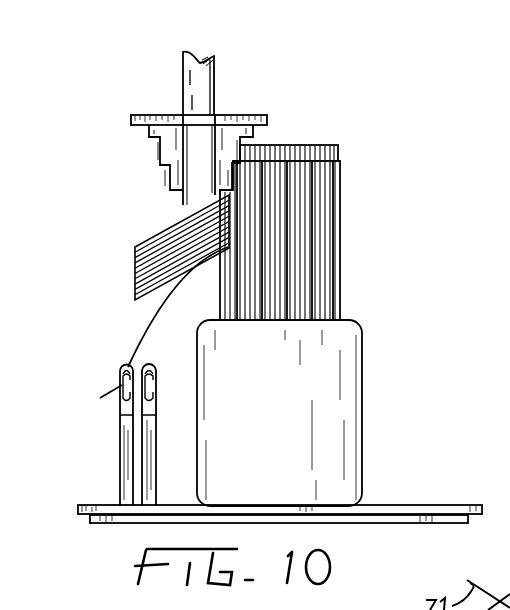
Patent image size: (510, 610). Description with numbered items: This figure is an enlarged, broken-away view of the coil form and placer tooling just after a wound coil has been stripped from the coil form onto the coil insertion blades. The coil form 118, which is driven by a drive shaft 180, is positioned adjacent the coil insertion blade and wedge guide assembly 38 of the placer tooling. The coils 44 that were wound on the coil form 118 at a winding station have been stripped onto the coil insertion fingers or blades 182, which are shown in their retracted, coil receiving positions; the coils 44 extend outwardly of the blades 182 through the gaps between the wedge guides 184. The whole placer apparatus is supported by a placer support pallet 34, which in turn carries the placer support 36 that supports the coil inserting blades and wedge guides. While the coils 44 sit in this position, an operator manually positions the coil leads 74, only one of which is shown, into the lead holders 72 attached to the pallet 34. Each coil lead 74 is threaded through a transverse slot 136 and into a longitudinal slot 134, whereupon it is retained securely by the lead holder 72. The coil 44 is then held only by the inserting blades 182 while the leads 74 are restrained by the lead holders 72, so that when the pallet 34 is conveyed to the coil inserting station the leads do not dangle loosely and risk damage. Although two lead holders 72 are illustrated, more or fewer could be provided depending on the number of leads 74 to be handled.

The placer support pallet 34 is at (385, 512).
The placer support 36 is at (333, 408).
The coil insertion blade and wedge guide assembly 38 is at (352, 208).
The coils 44 is at (135, 248).
The lead holders 72 is at (147, 425).
The coil leads 74 is at (160, 325).
The coil form 118 is at (140, 152).
The longitudinal slot 134 is at (148, 365).
The transverse slot 136 is at (160, 387).
The drive shaft 180 is at (200, 78).
The coil insertion blades 182 is at (337, 152).
The wedge guides 184 is at (327, 210).